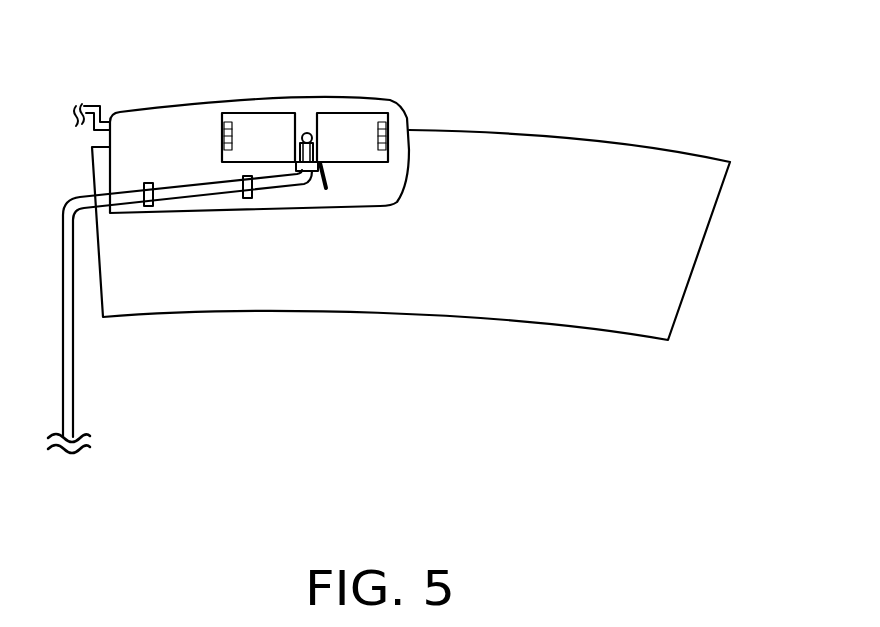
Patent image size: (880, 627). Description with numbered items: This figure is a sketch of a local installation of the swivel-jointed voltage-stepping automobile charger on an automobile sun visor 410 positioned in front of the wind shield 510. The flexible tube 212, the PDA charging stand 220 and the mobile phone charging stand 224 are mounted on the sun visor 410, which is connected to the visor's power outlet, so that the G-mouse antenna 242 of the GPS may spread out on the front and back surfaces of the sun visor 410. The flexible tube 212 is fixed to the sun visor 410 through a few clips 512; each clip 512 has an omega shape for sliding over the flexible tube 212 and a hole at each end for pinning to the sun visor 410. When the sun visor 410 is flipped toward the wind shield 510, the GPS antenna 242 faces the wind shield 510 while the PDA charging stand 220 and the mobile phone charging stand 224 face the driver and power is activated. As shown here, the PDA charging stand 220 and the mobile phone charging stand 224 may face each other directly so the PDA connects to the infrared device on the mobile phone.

The wind shield 510 is at (718, 177).
The sun visor 410 is at (205, 110).
The mobile phone charging stand 224 is at (272, 128).
The PDA charging stand 220 is at (357, 128).
The G-mouse antenna 242 is at (330, 178).
The flexible tube 212 is at (73, 368).
The clip 512 is at (248, 199).